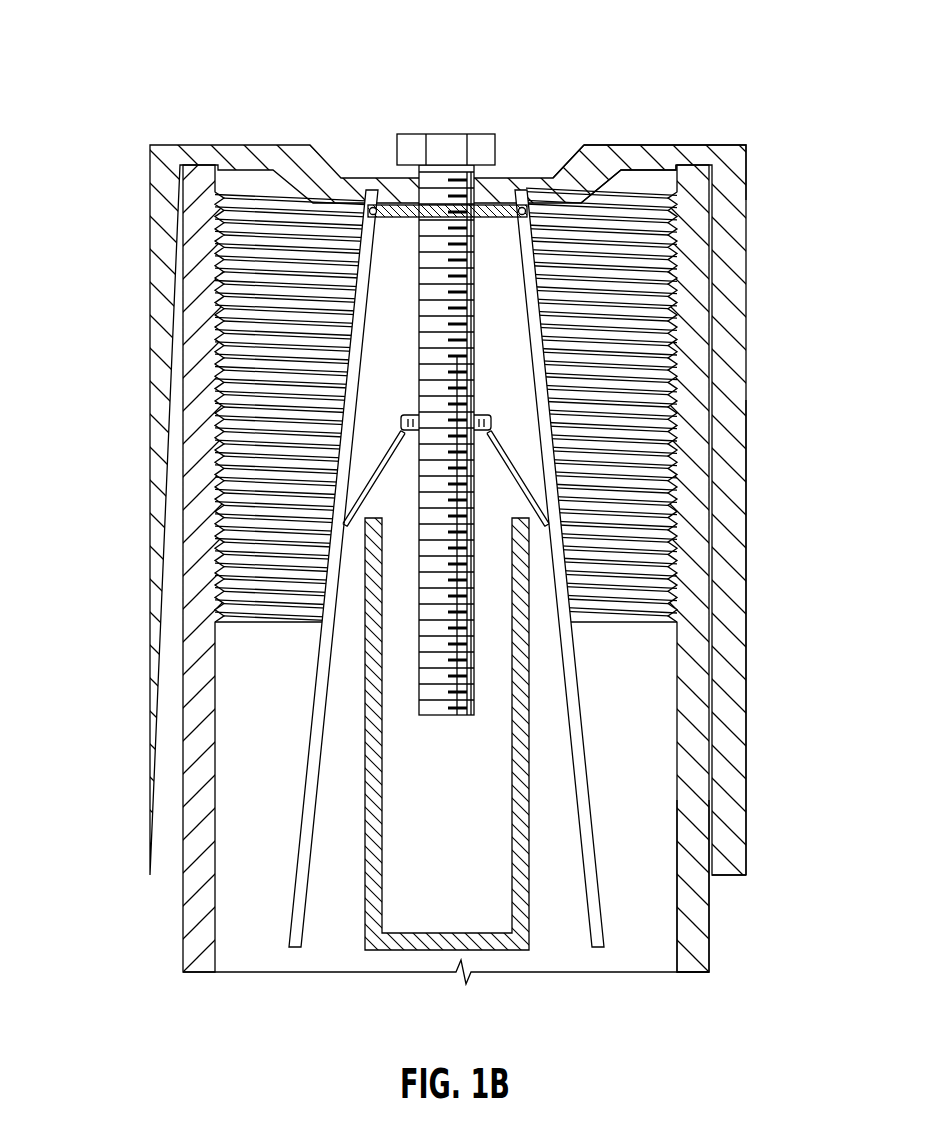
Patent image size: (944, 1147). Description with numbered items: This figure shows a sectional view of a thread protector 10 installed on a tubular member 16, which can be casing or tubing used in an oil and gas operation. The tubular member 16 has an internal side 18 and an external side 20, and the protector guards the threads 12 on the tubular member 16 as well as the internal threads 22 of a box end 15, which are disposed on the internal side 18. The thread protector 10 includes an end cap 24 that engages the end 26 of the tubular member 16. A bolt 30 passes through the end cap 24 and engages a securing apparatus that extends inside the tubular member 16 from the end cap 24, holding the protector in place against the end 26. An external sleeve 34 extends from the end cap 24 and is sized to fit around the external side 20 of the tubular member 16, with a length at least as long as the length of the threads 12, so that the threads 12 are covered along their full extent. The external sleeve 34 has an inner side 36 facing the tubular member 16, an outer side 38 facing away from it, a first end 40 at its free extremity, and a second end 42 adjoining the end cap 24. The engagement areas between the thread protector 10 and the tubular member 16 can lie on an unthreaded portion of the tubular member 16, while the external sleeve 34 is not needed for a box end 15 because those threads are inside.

The thread protector 10 is at (133, 108).
The threads 12 is at (650, 270).
The box end 15 is at (687, 435).
The tubular member 16 is at (690, 304).
The internal side 18 is at (217, 693).
The external side 20 is at (183, 270).
The internal threads 22 is at (224, 236).
The end cap 24 is at (618, 157).
The end 26 is at (685, 177).
The bolt 30 is at (420, 291).
The external sleeve 34 is at (747, 709).
The inner side 36 is at (707, 832).
The outer side 38 is at (747, 566).
The first end 40 is at (733, 877).
The second end 42 is at (733, 145).